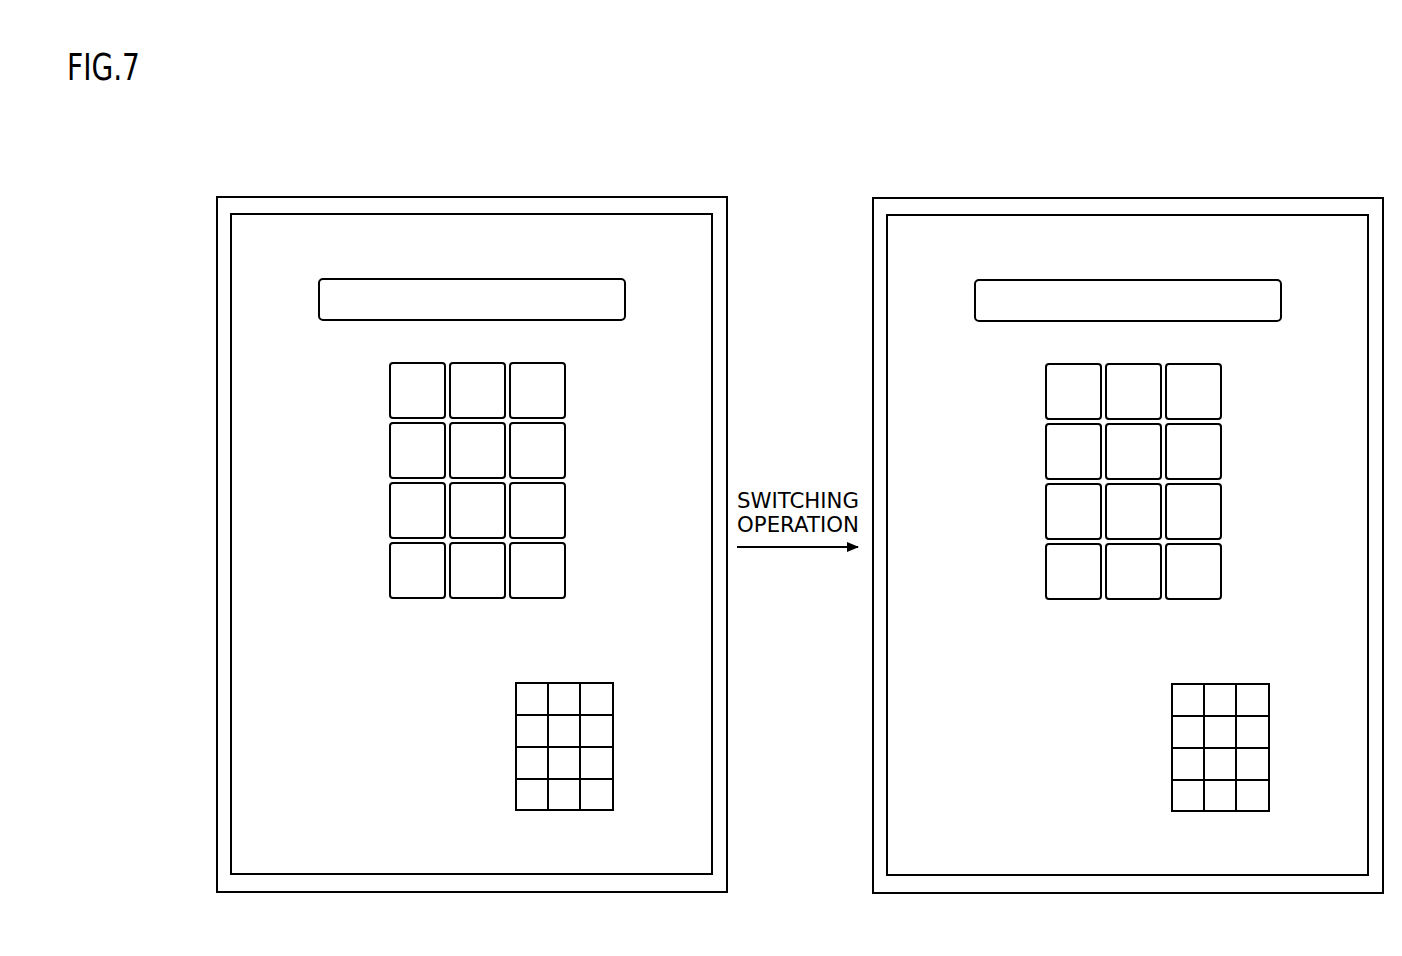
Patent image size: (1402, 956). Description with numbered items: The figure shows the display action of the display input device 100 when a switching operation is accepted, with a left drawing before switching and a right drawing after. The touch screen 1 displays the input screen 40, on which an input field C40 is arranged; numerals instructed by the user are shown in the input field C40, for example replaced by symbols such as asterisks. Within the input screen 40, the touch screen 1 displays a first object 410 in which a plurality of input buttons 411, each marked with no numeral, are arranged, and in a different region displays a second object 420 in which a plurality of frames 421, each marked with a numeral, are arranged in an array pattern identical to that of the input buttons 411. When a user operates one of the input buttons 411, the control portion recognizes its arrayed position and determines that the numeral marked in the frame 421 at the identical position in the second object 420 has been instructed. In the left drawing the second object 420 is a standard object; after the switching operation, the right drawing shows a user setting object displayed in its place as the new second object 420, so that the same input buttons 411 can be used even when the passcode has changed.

The display input device 100 is at (252, 197).
The touch screen 1 is at (252, 270).
The input screen 40 is at (674, 238).
The input field C40 is at (557, 285).
The first object 410 is at (577, 362).
The input button 411 is at (804, 484).
The second object 420 is at (485, 819).
The frame 421 is at (893, 745).